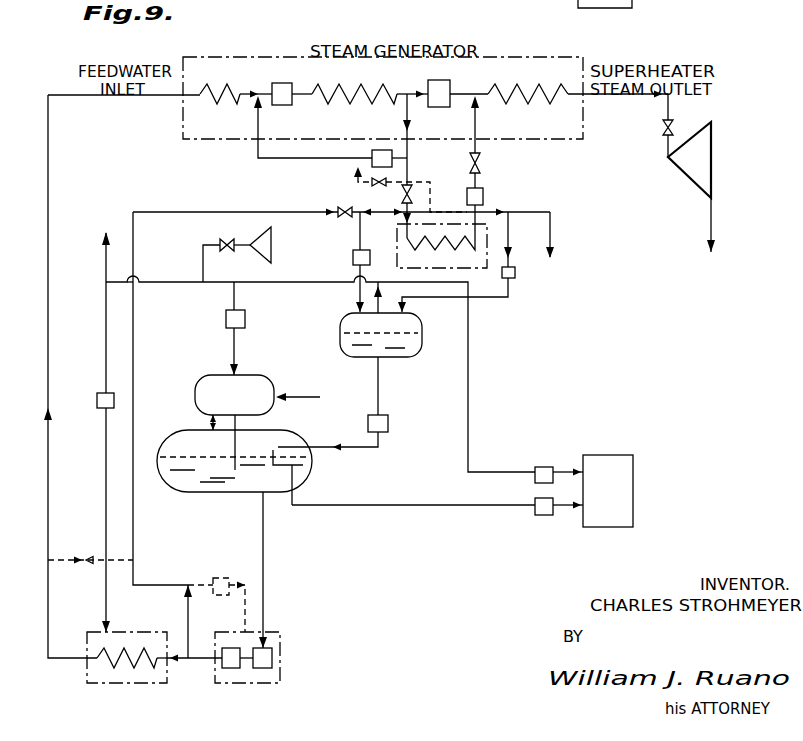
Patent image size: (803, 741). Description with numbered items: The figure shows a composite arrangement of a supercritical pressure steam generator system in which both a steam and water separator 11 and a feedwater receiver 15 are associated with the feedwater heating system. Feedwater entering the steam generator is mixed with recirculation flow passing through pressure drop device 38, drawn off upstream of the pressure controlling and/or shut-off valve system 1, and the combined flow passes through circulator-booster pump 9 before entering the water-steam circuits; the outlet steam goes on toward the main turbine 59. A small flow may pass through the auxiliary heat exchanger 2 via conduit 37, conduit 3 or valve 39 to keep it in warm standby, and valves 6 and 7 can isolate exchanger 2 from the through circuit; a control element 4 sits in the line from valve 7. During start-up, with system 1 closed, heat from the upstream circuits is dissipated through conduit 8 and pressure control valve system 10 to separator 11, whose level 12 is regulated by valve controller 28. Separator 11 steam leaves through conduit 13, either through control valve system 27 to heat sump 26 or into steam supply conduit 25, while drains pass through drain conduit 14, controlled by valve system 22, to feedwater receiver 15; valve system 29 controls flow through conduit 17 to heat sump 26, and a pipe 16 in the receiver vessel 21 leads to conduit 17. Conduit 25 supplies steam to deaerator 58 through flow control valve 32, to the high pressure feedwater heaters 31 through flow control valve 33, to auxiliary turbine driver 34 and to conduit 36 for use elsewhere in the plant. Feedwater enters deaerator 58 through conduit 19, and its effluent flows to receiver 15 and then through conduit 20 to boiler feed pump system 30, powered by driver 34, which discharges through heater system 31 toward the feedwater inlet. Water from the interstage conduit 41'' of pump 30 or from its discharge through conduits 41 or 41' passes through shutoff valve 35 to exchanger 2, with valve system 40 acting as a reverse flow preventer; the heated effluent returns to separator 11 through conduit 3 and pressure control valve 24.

The pressure controlling and/or shut-off valve system 1 is at (450, 88).
The auxiliary heat exchanger 2 is at (472, 270).
The conduit 3 is at (508, 249).
The control element 4 is at (485, 198).
The valve 6 is at (412, 196).
The valve 7 is at (484, 165).
The conduit 8 is at (360, 243).
The circulator-booster pump 9 is at (289, 84).
The pressure control valve system 10 is at (371, 260).
The steam and water separator 11 is at (340, 320).
The level 12 is at (392, 331).
The conduit 13 is at (374, 298).
The drain conduit 14 is at (380, 389).
The feedwater receiver 15 is at (190, 428).
The pipe 16 is at (304, 464).
The conduit 17 is at (420, 505).
The conduit 19 is at (298, 380).
The conduit 20 is at (265, 573).
The storage tank 21 is at (170, 440).
The valve system 22 is at (389, 428).
The throttling valve system 24 is at (516, 273).
The steam supply conduit 25 is at (277, 282).
The heat sump 26 is at (608, 491).
The control valve system 27 is at (553, 450).
The valve controller 28 is at (576, 11).
The valve system 29 is at (552, 515).
The boiler feed pump system 30 is at (283, 660).
The high pressure feedwater heaters 31 is at (168, 675).
The flow control valve 32 is at (251, 312).
The flow control valve 33 is at (97, 400).
The auxiliary turbine driver 34 is at (271, 245).
The shutoff valve 35 is at (325, 204).
The conduit 36 is at (106, 267).
The conduit 37 is at (553, 243).
The pressure drop device 38 is at (385, 150).
The valve 39 is at (404, 189).
The valve system 40 is at (226, 578).
The conduit 41 is at (90, 547).
The conduit 41' is at (170, 621).
The interstage conduit 41'' is at (230, 607).
The deaerator 58 is at (234, 352).
The main turbine 59 is at (700, 125).